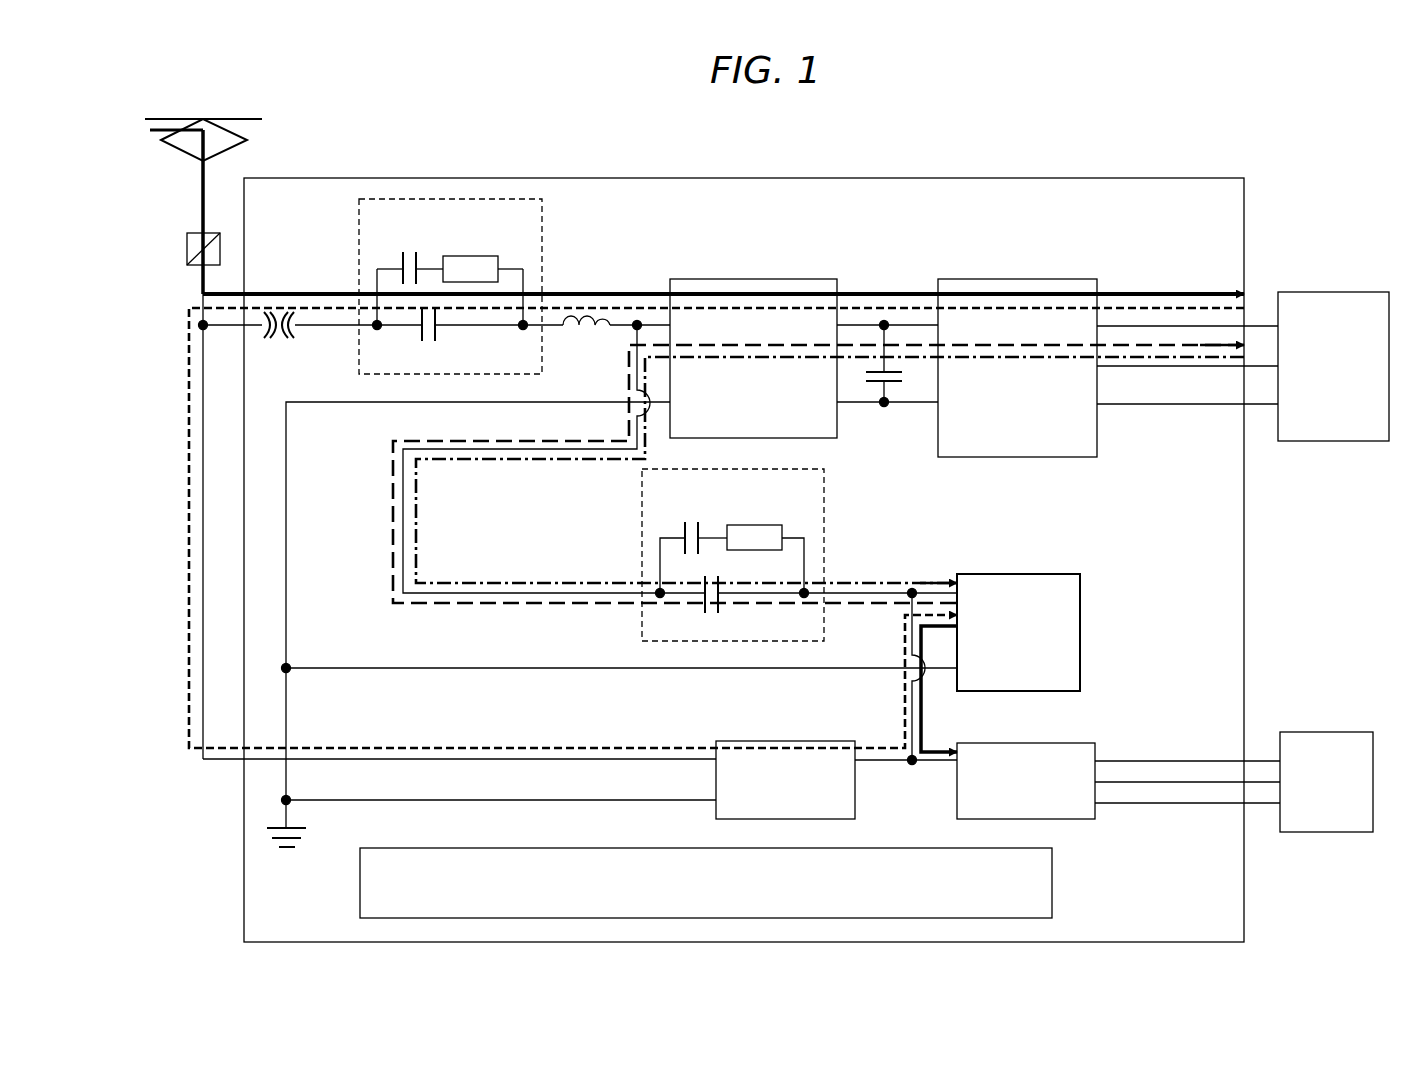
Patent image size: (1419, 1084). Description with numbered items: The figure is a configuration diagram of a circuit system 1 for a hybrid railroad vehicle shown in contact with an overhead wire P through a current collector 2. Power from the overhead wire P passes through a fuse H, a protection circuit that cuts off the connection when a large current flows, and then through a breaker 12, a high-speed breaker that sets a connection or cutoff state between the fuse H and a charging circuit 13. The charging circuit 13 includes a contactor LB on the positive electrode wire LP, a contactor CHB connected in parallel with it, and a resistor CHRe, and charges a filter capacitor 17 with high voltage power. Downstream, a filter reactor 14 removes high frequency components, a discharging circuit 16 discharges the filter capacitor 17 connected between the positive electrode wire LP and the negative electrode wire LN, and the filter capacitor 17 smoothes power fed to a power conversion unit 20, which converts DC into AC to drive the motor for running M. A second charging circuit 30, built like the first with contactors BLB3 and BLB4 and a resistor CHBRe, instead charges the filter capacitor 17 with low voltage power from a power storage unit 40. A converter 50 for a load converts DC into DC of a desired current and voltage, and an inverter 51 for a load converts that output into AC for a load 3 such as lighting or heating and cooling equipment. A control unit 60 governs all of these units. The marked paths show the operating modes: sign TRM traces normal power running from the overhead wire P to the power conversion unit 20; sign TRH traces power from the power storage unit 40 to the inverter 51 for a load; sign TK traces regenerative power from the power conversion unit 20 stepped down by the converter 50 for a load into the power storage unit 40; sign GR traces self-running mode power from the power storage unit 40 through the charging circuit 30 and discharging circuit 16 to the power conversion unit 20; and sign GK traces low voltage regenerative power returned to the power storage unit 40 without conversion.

The circuit system for a railroad vehicle 1 is at (1180, 178).
The overhead wire P is at (258, 119).
The current collector 2 is at (247, 140).
The fuse H is at (193, 233).
The power path at power running in normal mode TRM is at (1128, 294).
The power path at regeneration in normal mode TK is at (1199, 308).
The power path at regeneration in self-running mode GK is at (1163, 357).
The power path at power running in self-running mode GR is at (1125, 358).
The positive electrode wire LP is at (328, 328).
The breaker 12 is at (282, 342).
The contactor LB is at (437, 335).
The charging circuit 13 is at (542, 217).
The contactor CHB is at (418, 258).
The resistor CHRe is at (487, 240).
The filter reactor 14 is at (598, 340).
The negative electrode wire LN is at (340, 402).
The contactor BLB3 is at (720, 612).
The charging circuit 30 is at (642, 517).
The contactor BLB4 is at (697, 530).
The resistor CHBRe is at (775, 508).
The discharging circuit 16 is at (740, 279).
The filter capacitor 17 is at (895, 385).
The power conversion unit 20 is at (1033, 279).
The motor for running M is at (1330, 292).
The power storage unit 40 is at (1025, 574).
The power path from power storage unit to inverter for a load TRH is at (923, 717).
The converter for a load 50 is at (797, 741).
The inverter for a load 51 is at (1040, 743).
The load 3 is at (1330, 732).
The control unit 60 is at (1052, 882).